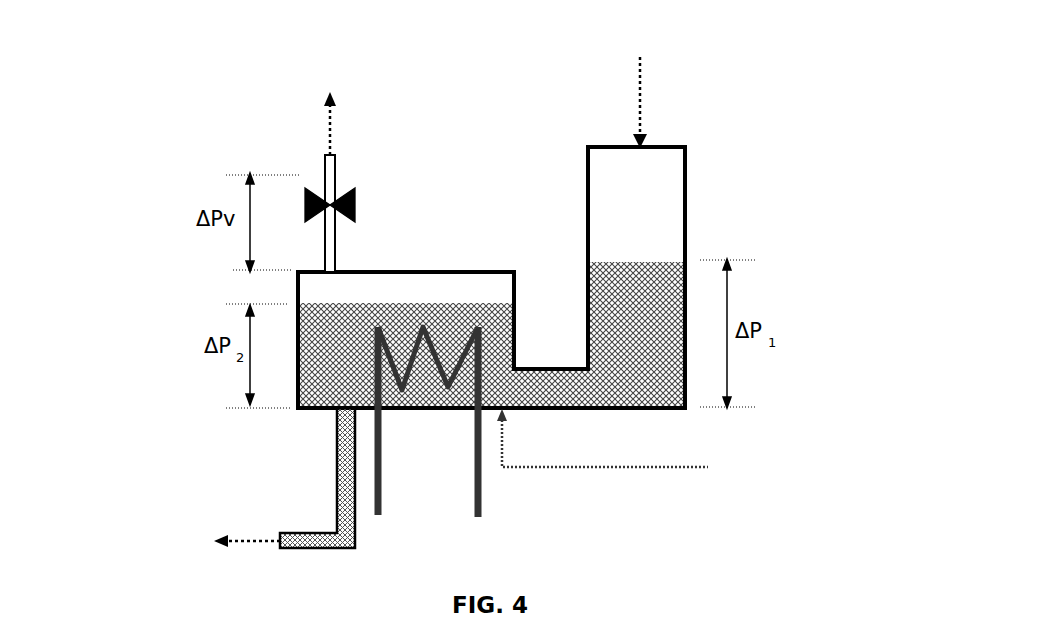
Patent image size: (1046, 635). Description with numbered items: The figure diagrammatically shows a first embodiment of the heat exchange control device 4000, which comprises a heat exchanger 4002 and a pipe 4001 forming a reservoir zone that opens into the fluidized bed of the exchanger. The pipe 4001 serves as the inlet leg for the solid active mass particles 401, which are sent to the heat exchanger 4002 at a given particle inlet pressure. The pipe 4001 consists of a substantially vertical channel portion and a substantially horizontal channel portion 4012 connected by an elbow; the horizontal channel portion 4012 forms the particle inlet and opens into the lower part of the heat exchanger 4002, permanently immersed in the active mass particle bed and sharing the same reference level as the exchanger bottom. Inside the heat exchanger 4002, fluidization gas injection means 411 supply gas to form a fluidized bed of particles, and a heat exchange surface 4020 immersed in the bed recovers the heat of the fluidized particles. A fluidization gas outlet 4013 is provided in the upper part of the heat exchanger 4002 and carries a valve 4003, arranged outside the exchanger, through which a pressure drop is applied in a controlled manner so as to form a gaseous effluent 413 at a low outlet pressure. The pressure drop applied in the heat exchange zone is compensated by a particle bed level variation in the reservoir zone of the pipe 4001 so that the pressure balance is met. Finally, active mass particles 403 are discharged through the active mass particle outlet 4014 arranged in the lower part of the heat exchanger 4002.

The heat exchange control device 4000 is at (183, 112).
The pipe 4001 is at (685, 180).
The heat exchanger 4002 is at (382, 271).
The valve 4003 is at (350, 190).
The active mass particles 401 is at (640, 88).
The active mass particles 403 is at (232, 538).
The fluidization gas injection means 411 is at (547, 468).
The gaseous effluent 413 is at (332, 122).
The substantially horizontal channel portion 4012 is at (532, 368).
The fluidization gas outlet 4013 is at (335, 246).
The active mass particle outlet 4014 is at (335, 434).
The heat exchange surface 4020 is at (405, 410).